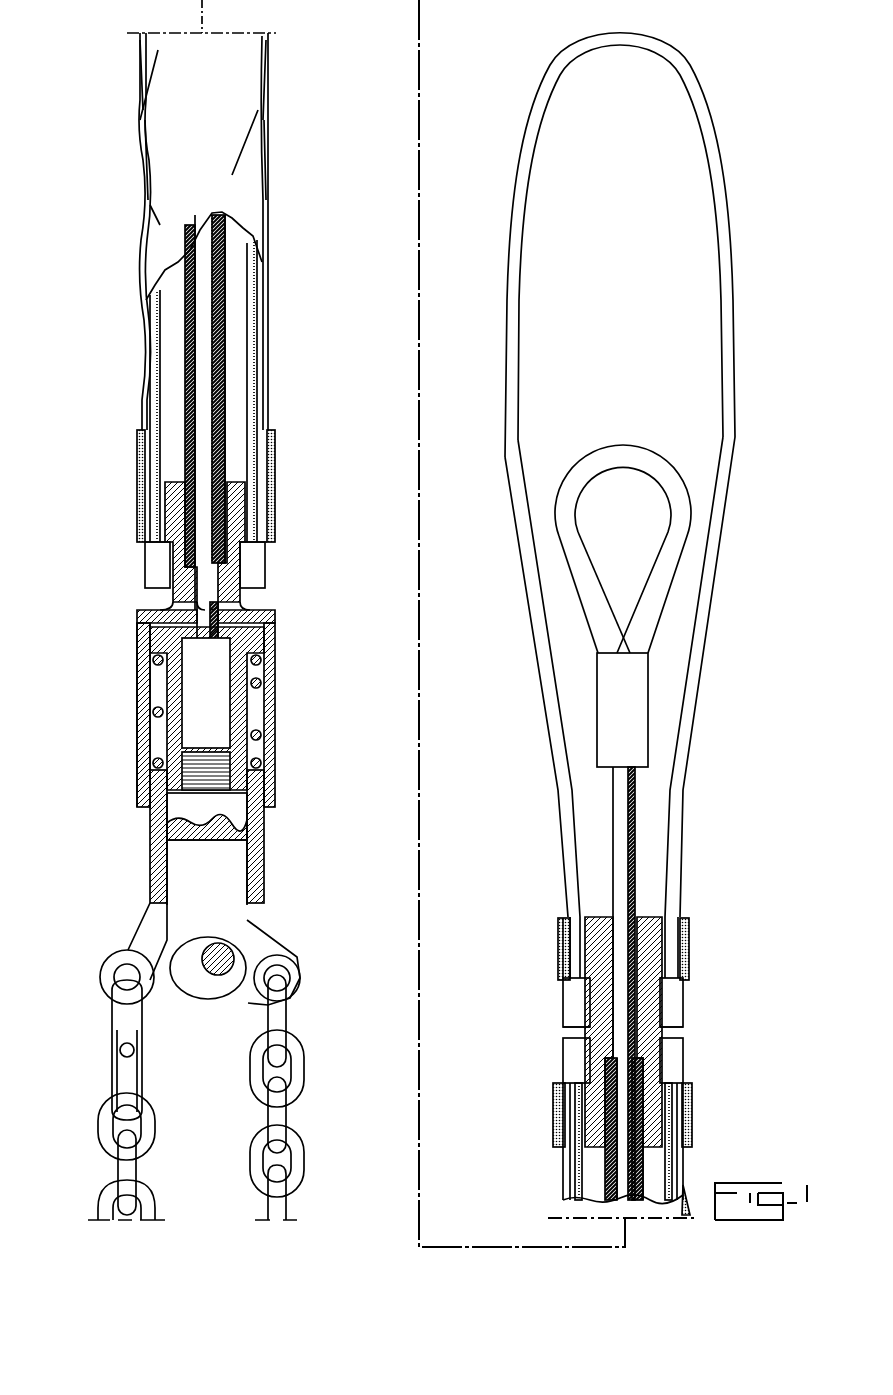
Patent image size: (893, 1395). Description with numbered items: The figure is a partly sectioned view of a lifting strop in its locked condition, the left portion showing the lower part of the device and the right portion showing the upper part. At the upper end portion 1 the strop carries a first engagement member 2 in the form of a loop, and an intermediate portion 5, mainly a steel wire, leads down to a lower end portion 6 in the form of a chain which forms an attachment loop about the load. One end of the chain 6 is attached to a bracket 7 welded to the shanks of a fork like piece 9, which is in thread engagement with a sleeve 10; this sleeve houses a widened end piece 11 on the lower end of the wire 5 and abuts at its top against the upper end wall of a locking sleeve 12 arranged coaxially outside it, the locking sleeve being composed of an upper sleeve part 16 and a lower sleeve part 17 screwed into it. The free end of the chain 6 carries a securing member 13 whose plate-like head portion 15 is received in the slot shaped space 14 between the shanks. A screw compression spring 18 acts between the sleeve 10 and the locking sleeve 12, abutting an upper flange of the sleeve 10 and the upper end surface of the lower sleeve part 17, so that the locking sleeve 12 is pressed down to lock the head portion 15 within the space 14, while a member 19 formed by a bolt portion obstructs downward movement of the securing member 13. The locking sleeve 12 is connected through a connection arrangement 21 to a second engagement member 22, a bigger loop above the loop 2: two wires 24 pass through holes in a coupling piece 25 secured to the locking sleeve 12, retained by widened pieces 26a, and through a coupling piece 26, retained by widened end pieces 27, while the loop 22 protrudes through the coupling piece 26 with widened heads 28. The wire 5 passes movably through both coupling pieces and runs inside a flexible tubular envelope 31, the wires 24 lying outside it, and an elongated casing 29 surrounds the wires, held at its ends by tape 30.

The upper end portion 1 is at (500, 606).
The first engagement member 2 is at (613, 456).
The intermediate portion 5 is at (205, 410).
The lower end portion 6 is at (312, 1098).
The bracket 7 is at (272, 955).
The fork like piece 9 is at (235, 806).
The sleeve 10 is at (242, 705).
The widened end piece 11 is at (150, 610).
The locking sleeve 12 is at (137, 730).
The securing member 13 is at (130, 934).
The slot shaped space 14 is at (235, 940).
The head portion 15 is at (188, 878).
The upper sleeve part 16 is at (137, 683).
The lower sleeve part 17 is at (148, 832).
The spring 18 is at (262, 686).
The obstruction member 19 is at (210, 975).
The connection arrangement 21 is at (270, 318).
The second engagement member 22 is at (528, 172).
The wires 24 is at (150, 295).
The coupling piece 25 is at (178, 482).
The coupling piece 26 is at (598, 917).
The widened pieces 26a is at (157, 567).
The widened end pieces 27 is at (575, 1058).
The widened heads 28 is at (575, 1003).
The casing 29 is at (245, 166).
The tape 30 is at (275, 518).
The tubular envelope 31 is at (185, 362).